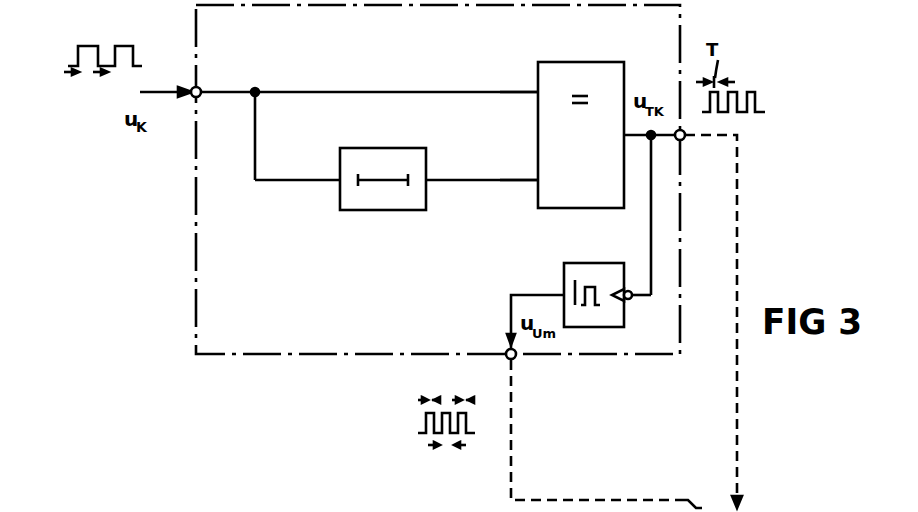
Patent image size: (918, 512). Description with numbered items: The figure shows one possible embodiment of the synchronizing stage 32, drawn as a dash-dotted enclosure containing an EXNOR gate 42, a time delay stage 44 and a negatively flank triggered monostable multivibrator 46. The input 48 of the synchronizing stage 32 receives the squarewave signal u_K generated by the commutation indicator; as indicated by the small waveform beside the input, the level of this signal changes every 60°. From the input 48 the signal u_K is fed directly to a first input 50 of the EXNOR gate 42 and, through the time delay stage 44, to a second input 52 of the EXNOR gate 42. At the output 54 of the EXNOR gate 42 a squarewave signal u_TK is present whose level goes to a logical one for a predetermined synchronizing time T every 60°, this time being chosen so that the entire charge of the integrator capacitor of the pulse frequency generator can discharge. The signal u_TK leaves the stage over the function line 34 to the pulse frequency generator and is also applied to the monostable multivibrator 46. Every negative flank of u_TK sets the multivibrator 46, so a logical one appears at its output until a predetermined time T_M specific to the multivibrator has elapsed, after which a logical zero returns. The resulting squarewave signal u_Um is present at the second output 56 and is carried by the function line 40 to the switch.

The synchronizing stage 32 is at (298, 341).
The function line 34 is at (738, 188).
The function line 40 is at (625, 500).
The EXNOR gate 42 is at (600, 171).
The time delay stage 44 is at (361, 211).
The negatively flank triggered monostable multivibrator 46 is at (564, 282).
The input 48 is at (200, 96).
The first input 50 is at (536, 90).
The second input 52 is at (536, 183).
The output 54 is at (684, 139).
The second output 56 is at (514, 359).
The 60 degree angle pulse train 60 is at (455, 463).